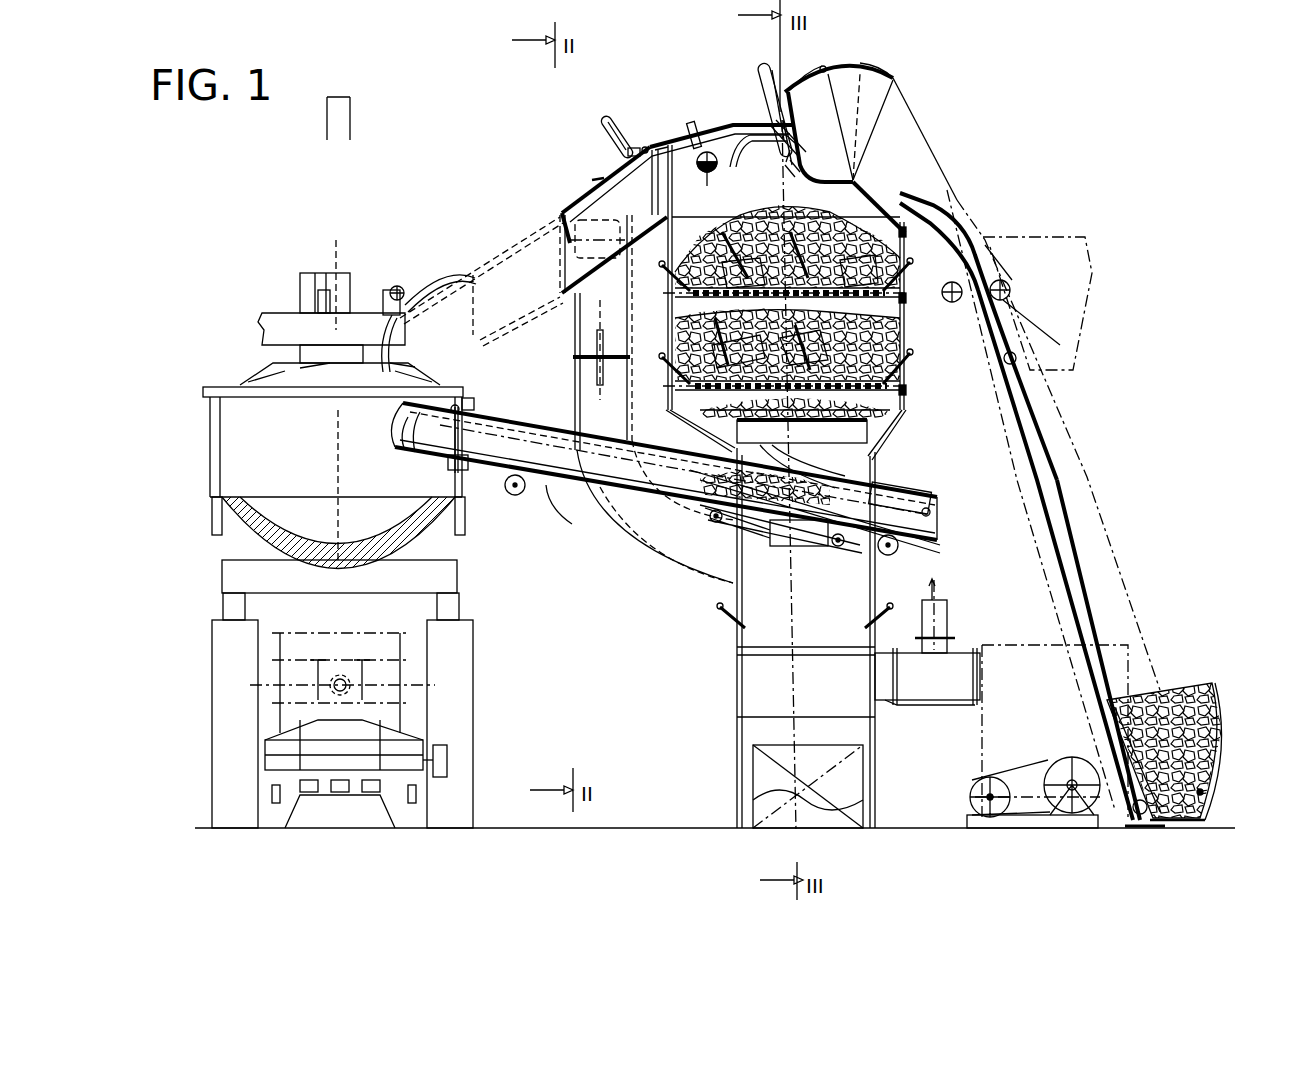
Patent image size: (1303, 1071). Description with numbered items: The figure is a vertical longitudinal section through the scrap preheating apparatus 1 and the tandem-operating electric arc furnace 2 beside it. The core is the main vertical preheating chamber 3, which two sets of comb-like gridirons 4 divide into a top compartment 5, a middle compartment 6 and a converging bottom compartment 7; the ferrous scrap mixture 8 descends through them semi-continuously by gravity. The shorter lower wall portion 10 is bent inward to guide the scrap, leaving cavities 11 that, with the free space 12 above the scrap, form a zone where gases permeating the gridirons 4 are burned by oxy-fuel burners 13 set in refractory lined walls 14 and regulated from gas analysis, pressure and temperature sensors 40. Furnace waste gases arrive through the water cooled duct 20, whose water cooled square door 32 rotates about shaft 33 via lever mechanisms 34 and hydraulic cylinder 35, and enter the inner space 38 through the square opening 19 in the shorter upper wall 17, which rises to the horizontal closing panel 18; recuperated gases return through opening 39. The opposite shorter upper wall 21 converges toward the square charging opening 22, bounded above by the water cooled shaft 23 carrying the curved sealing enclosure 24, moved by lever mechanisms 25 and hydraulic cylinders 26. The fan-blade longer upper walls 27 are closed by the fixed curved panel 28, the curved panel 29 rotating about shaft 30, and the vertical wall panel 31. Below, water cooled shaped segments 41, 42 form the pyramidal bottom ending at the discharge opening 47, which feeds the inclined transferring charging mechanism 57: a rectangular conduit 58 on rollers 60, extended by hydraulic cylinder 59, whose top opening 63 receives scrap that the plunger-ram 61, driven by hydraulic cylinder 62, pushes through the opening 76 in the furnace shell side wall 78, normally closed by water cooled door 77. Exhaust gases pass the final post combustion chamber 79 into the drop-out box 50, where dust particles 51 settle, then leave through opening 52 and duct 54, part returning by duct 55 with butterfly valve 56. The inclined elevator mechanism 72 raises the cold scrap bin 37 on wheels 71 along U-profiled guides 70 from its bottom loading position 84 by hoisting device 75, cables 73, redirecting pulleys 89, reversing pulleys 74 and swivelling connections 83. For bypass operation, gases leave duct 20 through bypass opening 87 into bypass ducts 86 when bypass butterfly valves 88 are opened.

The scrap preheating apparatus 1 is at (614, 165).
The electric arc furnace 2 is at (455, 540).
The main vertical preheating chamber 3 is at (676, 136).
The gridirons 4 is at (722, 292).
The top compartment 5 is at (672, 240).
The middle compartment 6 is at (672, 313).
The bottom compartment 7 is at (674, 410).
The ferrous scrap mixture 8 is at (748, 208).
The shorter lower wall portion 10 is at (670, 250).
The cavities 11 is at (676, 288).
The free space 12 is at (908, 318).
The oxy-fuel burners 13 is at (694, 124).
The refractory lined walls 14 is at (672, 327).
The shorter upper wall 17 is at (672, 205).
The horizontal closing panel 18 is at (765, 128).
The square opening 19 is at (663, 200).
The water cooled duct 20 is at (578, 208).
The shorter upper wall 21 is at (858, 206).
The square charging opening 22 is at (852, 182).
The water cooled shaft 23 is at (792, 140).
The water cooled sealing enclosure 24 is at (800, 176).
The lever mechanisms 25 is at (792, 162).
The hydraulic cylinders 26 is at (764, 84).
The longer upper walls 27 is at (885, 94).
The curved horizontal panel 28 is at (818, 75).
The curved horizontal panel 29 is at (865, 70).
The water cooled shaft 30 is at (828, 70).
The vertical wall panel 31 is at (792, 122).
The water cooled square door 32 is at (600, 185).
The water cooled shaft 33 is at (668, 160).
The lever mechanisms 34 is at (637, 150).
The hydraulic cylinder 35 is at (618, 130).
The scrap bin 37 is at (1222, 688).
The inner space 38 is at (722, 128).
The opening 39 is at (708, 174).
The sensors 40 is at (910, 232).
The water cooled shaped segment 41 is at (685, 428).
The water cooled shaped segment 42 is at (890, 436).
The rectangular opening 47 is at (788, 440).
The drop-out box 50 is at (870, 770).
The dust particles 51 is at (866, 815).
The opening 52 is at (872, 680).
The duct 54 is at (922, 703).
The duct 55 is at (937, 600).
The butterfly closing valve 56 is at (940, 635).
The transferring charging mechanism 57 is at (548, 505).
The rectangular conduit 58 is at (515, 422).
The double acting hydraulic cylinder 59 is at (780, 545).
The rollers 60 is at (508, 492).
The plunger-ram 61 is at (918, 495).
The double acting hydraulic cylinder 62 is at (935, 540).
The opening 63 is at (725, 505).
The U-profiled guides 70 is at (1080, 590).
The wheels 71 is at (1135, 830).
The inclined elevator mechanism 72 is at (1118, 612).
The cables 73 is at (1073, 462).
The cables direction reversing pulleys 74 is at (853, 100).
The hoisting device 75 is at (1035, 770).
The opening 76 is at (410, 430).
The water cooled door 77 is at (405, 410).
The shell side wall 78 is at (455, 465).
The final post combustion chamber 79 is at (735, 745).
The swivelling connections 83 is at (1205, 795).
The bottom loading position 84 is at (1240, 750).
The bypass ducts 86 is at (575, 378).
The bypass opening 87 is at (562, 262).
The bypass butterfly valves 88 is at (574, 357).
The cables redirecting pulleys 89 is at (952, 282).